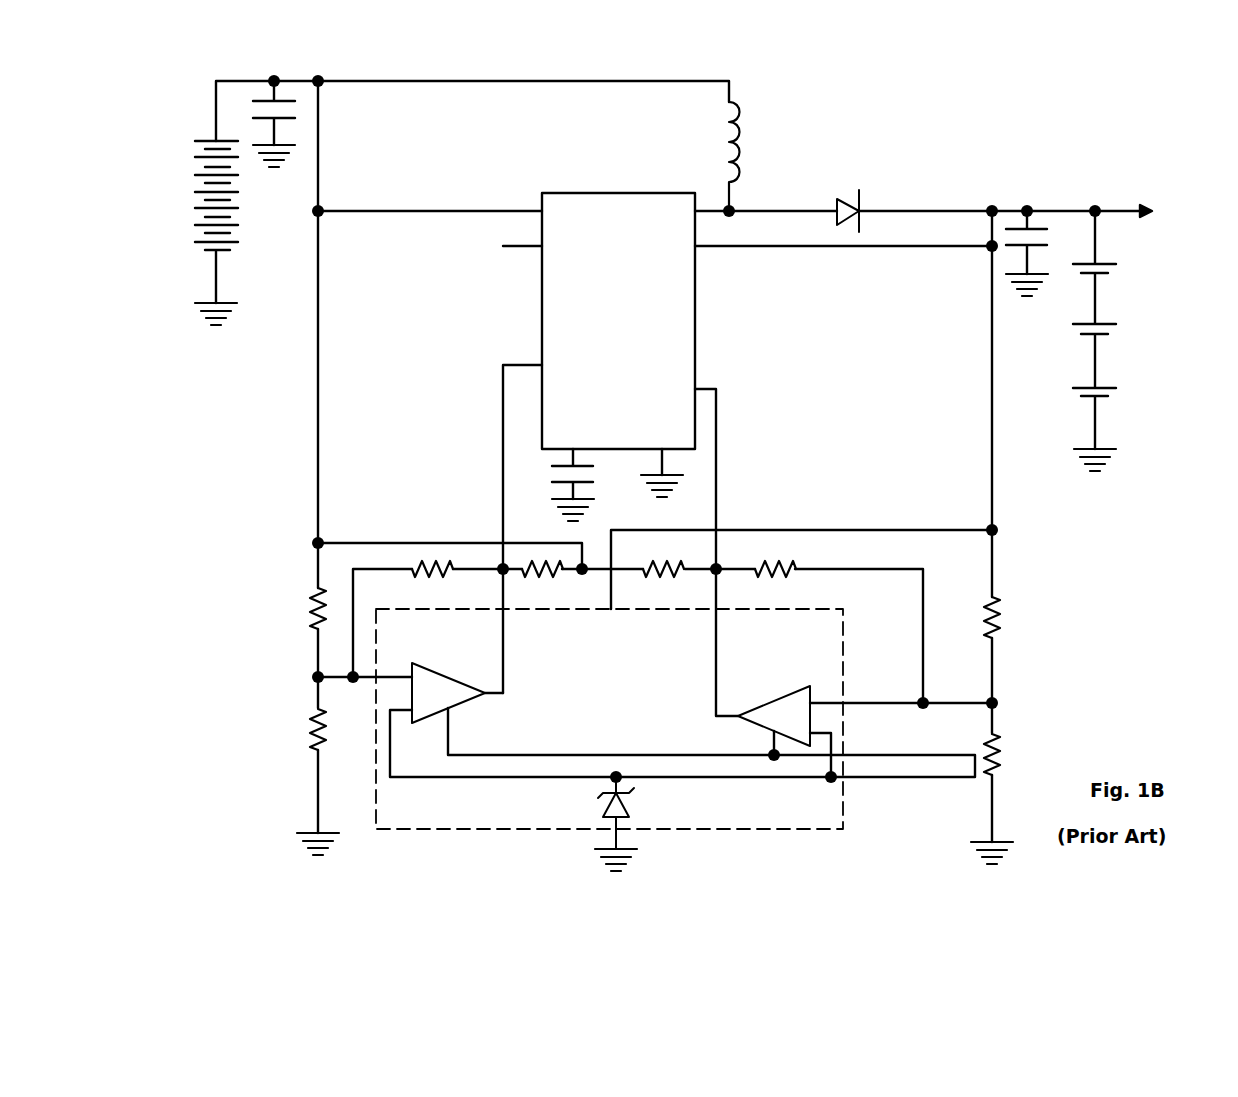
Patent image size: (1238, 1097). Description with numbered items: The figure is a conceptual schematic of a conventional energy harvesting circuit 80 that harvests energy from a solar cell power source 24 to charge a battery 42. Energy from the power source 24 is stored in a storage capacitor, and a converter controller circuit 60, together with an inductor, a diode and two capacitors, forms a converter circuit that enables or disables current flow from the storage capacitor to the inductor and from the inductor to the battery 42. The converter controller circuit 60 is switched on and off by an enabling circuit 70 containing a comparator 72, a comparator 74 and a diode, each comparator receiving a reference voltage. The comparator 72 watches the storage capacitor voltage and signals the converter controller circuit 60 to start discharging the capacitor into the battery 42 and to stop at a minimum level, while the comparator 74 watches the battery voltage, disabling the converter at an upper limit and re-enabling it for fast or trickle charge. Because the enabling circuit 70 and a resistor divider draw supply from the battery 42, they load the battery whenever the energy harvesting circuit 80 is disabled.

The energy harvesting circuit 80 is at (1130, 126).
The converter controller circuit 60 is at (589, 193).
The power source 24 is at (242, 228).
The battery 42 is at (1073, 388).
The enabling circuit 70 is at (843, 633).
The comparator 72 is at (440, 670).
The comparator 74 is at (782, 694).